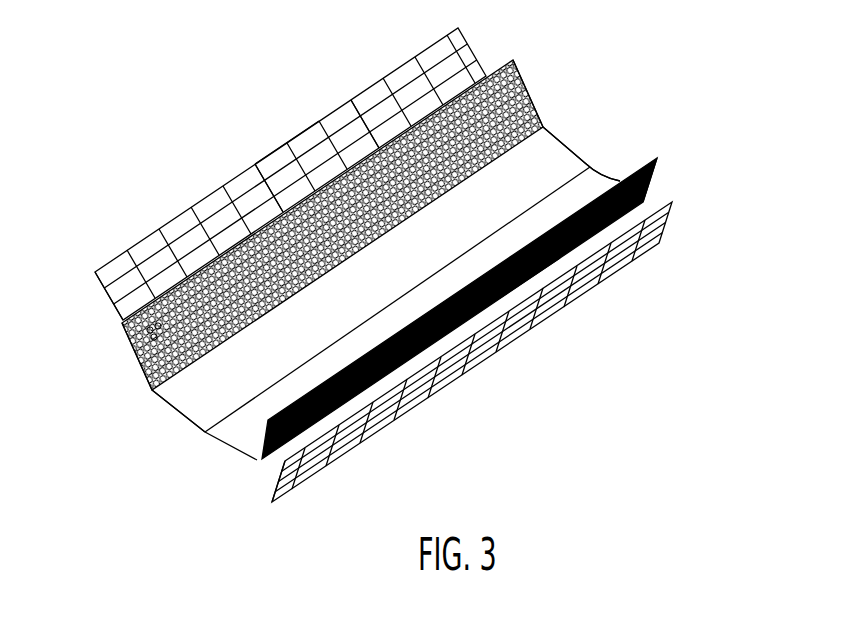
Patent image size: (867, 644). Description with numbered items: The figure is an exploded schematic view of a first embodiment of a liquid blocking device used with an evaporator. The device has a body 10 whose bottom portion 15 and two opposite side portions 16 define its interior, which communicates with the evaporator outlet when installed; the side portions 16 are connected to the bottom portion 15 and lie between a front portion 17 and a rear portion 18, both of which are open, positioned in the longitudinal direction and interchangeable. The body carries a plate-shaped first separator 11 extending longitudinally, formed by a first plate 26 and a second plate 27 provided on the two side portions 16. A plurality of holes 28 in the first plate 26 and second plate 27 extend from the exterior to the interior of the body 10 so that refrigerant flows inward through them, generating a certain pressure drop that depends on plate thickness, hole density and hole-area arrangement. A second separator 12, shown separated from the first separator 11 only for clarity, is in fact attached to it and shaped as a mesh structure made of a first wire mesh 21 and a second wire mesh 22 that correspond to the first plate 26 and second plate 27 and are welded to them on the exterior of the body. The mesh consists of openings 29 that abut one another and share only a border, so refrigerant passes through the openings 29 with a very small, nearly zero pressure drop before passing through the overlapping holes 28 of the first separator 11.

The body 10 is at (386, 293).
The first separator 11 is at (534, 77).
The second separator 12 is at (148, 218).
The bottom portion 15 is at (170, 419).
The side portions 16 is at (357, 97).
The front portion 17 is at (126, 375).
The rear portion 18 is at (624, 114).
The first wire mesh 21 is at (95, 279).
The second wire mesh 22 is at (280, 466).
The first plate 26 is at (130, 348).
The second plate 27 is at (262, 437).
The holes 28 is at (146, 325).
The openings 29 is at (262, 160).